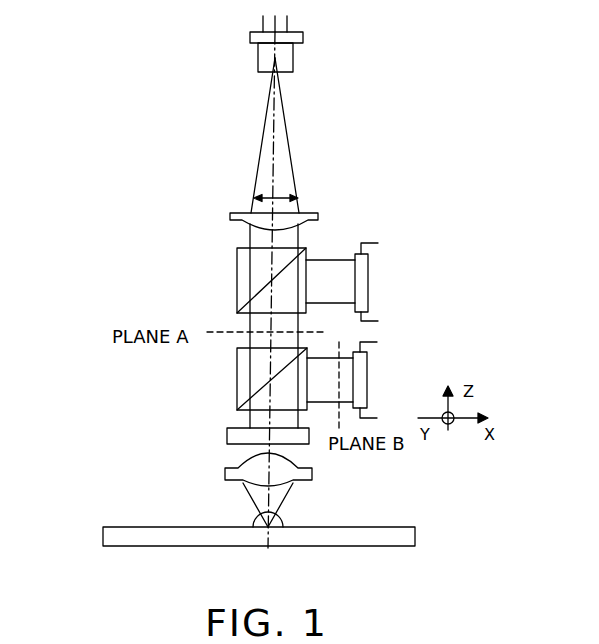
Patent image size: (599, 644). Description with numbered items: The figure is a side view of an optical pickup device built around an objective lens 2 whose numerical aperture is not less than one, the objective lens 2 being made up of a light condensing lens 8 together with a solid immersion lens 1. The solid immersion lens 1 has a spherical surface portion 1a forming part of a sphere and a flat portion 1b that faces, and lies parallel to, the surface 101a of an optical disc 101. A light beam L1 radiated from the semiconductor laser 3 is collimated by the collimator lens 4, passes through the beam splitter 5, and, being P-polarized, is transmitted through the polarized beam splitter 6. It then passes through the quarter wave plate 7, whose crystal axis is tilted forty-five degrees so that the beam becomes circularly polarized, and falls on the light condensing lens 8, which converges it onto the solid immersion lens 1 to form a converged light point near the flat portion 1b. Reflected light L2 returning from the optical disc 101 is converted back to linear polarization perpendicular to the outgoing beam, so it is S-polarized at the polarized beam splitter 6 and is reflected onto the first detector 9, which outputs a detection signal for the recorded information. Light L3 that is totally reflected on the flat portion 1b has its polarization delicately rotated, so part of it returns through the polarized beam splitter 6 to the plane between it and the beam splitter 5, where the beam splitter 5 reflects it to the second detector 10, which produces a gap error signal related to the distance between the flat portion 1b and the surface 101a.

The solid immersion lens 1 is at (260, 520).
The spherical surface portion 1a is at (285, 513).
The flat portion 1b is at (275, 528).
The objective lens 2 is at (318, 490).
The semiconductor laser 3 is at (291, 60).
The collimator lens 4 is at (312, 213).
The beam splitter 5 is at (303, 250).
The polarized beam splitter 6 is at (235, 377).
The quarter wave plate 7 is at (232, 433).
The light condensing lens 8 is at (235, 467).
The first detector 9 is at (362, 387).
The second detector 10 is at (362, 288).
The optical disc 101 is at (103, 529).
The surface of optical disc 101a is at (390, 530).
The light beam L1 is at (290, 140).
The reflected light L2 is at (323, 405).
The totally reflected light L3 is at (330, 258).